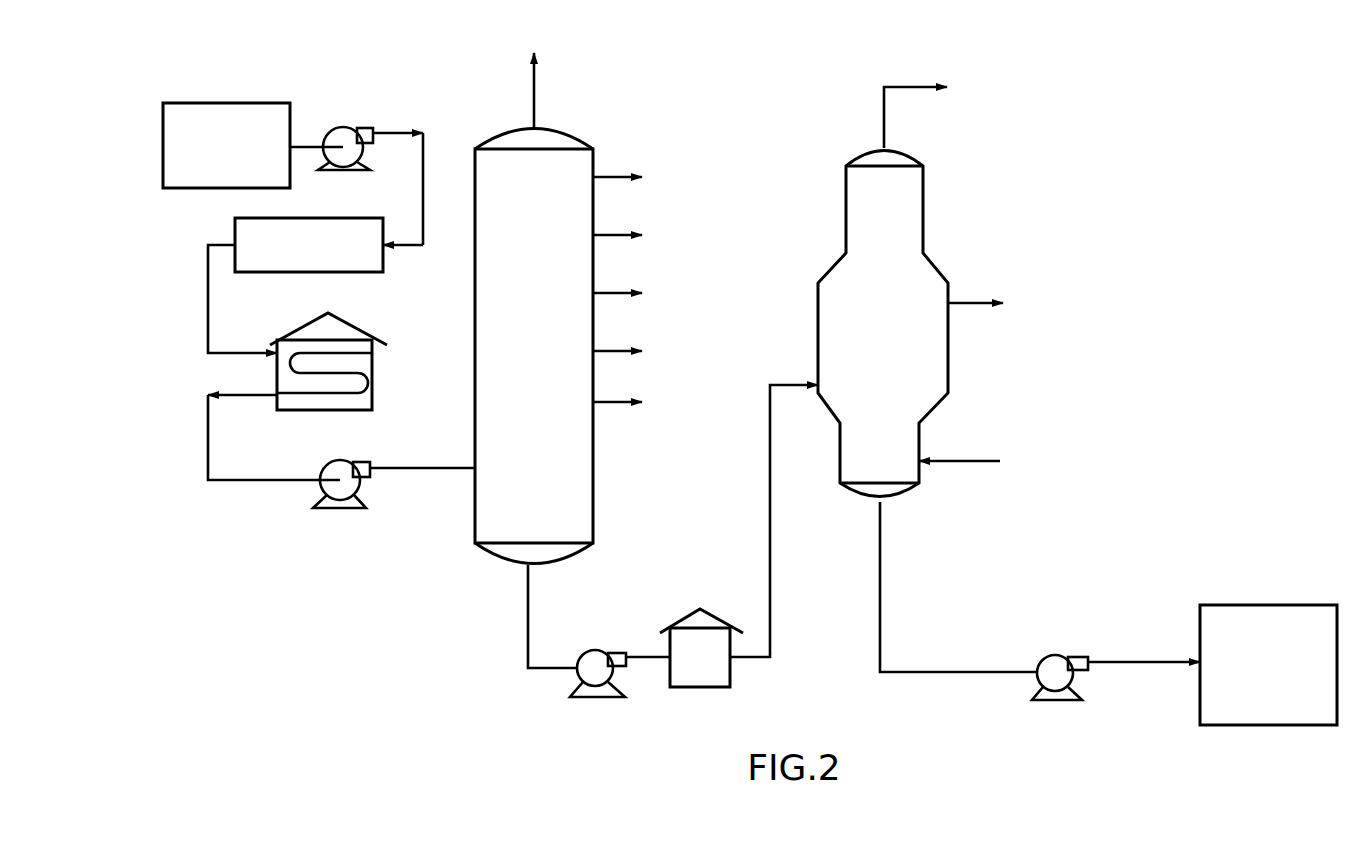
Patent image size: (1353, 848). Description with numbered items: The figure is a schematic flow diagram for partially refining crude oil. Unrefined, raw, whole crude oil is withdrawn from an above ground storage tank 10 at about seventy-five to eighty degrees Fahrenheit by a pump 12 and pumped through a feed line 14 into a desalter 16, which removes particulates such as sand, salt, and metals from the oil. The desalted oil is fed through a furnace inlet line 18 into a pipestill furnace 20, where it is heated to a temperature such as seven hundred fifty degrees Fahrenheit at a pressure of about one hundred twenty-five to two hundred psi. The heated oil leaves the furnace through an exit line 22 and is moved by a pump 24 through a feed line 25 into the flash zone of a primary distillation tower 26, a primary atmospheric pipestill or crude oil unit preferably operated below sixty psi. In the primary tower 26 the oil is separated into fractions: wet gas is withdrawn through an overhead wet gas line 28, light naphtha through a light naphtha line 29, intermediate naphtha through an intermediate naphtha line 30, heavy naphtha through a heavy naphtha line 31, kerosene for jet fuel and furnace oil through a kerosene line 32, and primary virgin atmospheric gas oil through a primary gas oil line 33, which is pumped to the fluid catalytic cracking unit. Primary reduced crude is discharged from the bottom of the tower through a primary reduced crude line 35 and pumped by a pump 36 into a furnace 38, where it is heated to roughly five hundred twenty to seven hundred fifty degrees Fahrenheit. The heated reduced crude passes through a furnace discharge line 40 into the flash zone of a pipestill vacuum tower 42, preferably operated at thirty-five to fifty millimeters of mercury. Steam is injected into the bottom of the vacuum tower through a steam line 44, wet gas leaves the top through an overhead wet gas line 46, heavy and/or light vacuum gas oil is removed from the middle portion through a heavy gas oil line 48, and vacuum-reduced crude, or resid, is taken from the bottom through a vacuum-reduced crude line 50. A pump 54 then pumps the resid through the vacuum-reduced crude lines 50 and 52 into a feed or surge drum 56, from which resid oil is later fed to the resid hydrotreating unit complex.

The storage tank 10 is at (214, 185).
The pump 12 is at (341, 128).
The feed line 14 is at (423, 190).
The desalter 16 is at (322, 257).
The furnace inlet line 18 is at (208, 313).
The pipestill furnace 20 is at (357, 328).
The exit line 22 is at (208, 439).
The pump 24 is at (358, 492).
The feed line 25 is at (407, 467).
The primary distillation tower 26 is at (475, 342).
The overhead wet gas line 28 is at (538, 88).
The light naphtha line 29 is at (610, 175).
The intermediate naphtha line 30 is at (608, 234).
The heavy naphtha line 31 is at (608, 292).
The kerosene line 32 is at (606, 350).
The primary gas oil line 33 is at (604, 401).
The primary reduced crude line 35 is at (527, 600).
The pump 36 is at (597, 650).
The furnace 38 is at (718, 688).
The furnace discharge line 40 is at (770, 530).
The pipestill vacuum tower 42 is at (818, 306).
The steam line 44 is at (955, 462).
The overhead wet gas line 46 is at (888, 124).
The heavy gas oil line 48 is at (967, 300).
The vacuum-reduced crude line 50 is at (880, 630).
The vacuum-reduced crude line 52 is at (1128, 660).
The pump 54 is at (1055, 655).
The surge drum 56 is at (1253, 678).